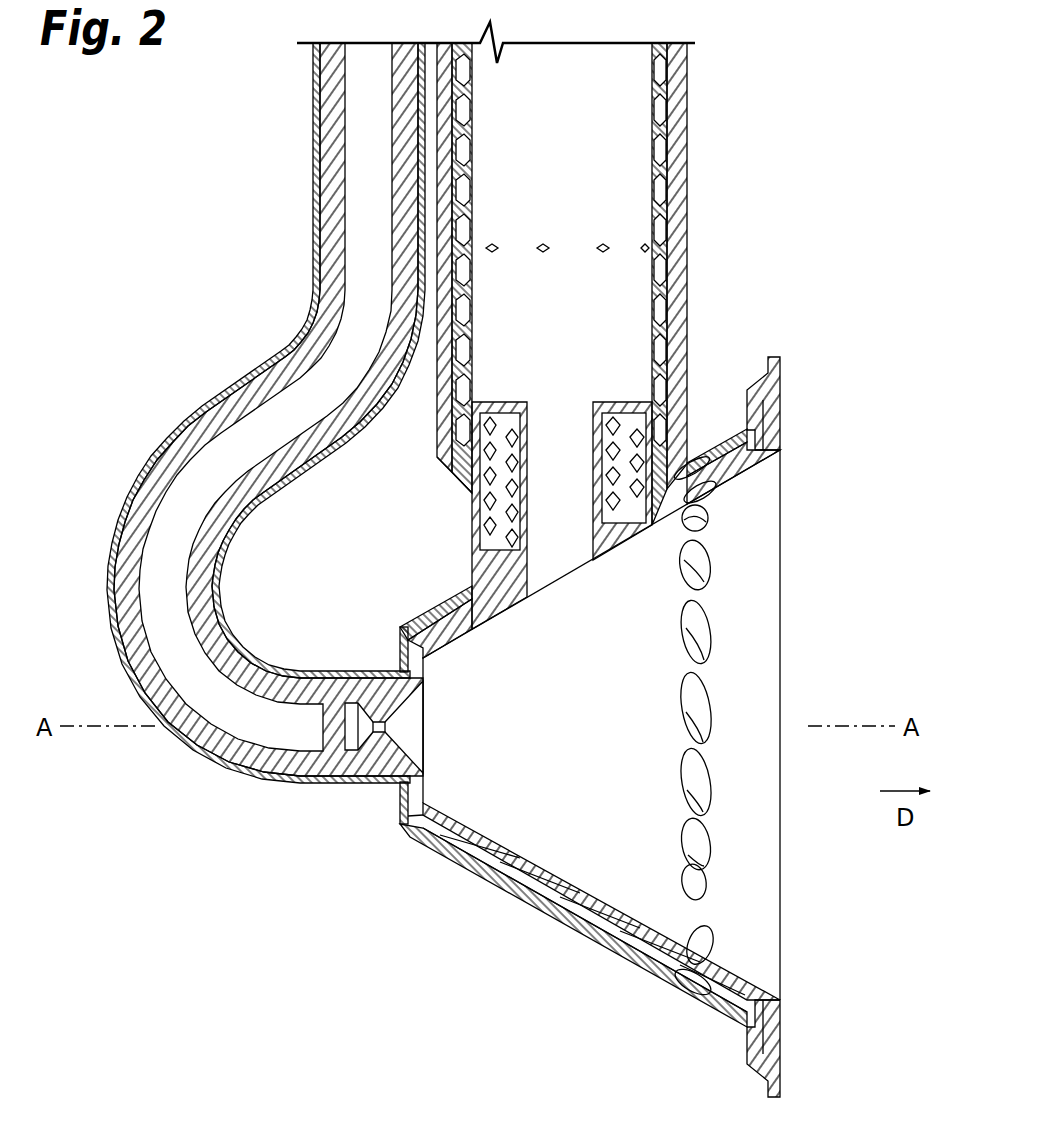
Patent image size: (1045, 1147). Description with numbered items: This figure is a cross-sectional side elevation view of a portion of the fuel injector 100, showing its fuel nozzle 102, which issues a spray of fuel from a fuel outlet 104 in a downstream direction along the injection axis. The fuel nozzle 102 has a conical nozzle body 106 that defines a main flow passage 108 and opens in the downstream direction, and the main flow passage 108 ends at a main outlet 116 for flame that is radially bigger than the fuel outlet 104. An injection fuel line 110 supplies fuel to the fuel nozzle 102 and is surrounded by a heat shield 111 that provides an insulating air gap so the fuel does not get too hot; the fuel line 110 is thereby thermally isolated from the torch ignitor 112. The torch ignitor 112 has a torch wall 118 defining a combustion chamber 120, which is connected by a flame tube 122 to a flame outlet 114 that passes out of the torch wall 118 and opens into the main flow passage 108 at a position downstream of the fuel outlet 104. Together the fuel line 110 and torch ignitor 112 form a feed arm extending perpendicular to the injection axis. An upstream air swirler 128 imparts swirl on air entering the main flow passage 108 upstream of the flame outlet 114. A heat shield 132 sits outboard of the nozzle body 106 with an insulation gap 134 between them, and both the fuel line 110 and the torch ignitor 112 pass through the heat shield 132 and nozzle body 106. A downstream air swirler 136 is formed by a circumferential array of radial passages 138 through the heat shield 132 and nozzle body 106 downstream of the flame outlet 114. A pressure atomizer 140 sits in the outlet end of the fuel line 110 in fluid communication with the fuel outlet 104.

The fuel injector 100 is at (106, 246).
The fuel nozzle 102 is at (832, 486).
The fuel outlet 104 is at (452, 720).
The nozzle body 106 is at (494, 850).
The main flow passage 108 is at (647, 772).
The injection fuel line 110 is at (375, 202).
The heat shield 111 is at (258, 372).
The torch ignitor 112 is at (716, 170).
The flame outlet 114 is at (565, 578).
The main outlet 116 is at (775, 668).
The torch wall 118 is at (680, 272).
The combustion chamber 120 is at (583, 167).
The flame tube 122 is at (560, 483).
The upstream air swirler 128 is at (372, 652).
The heat shield 132 is at (533, 900).
The insulation gap 134 is at (480, 857).
The downstream air swirler 136 is at (676, 1000).
The radial passages 138 is at (732, 746).
The pressure atomizer 140 is at (385, 753).